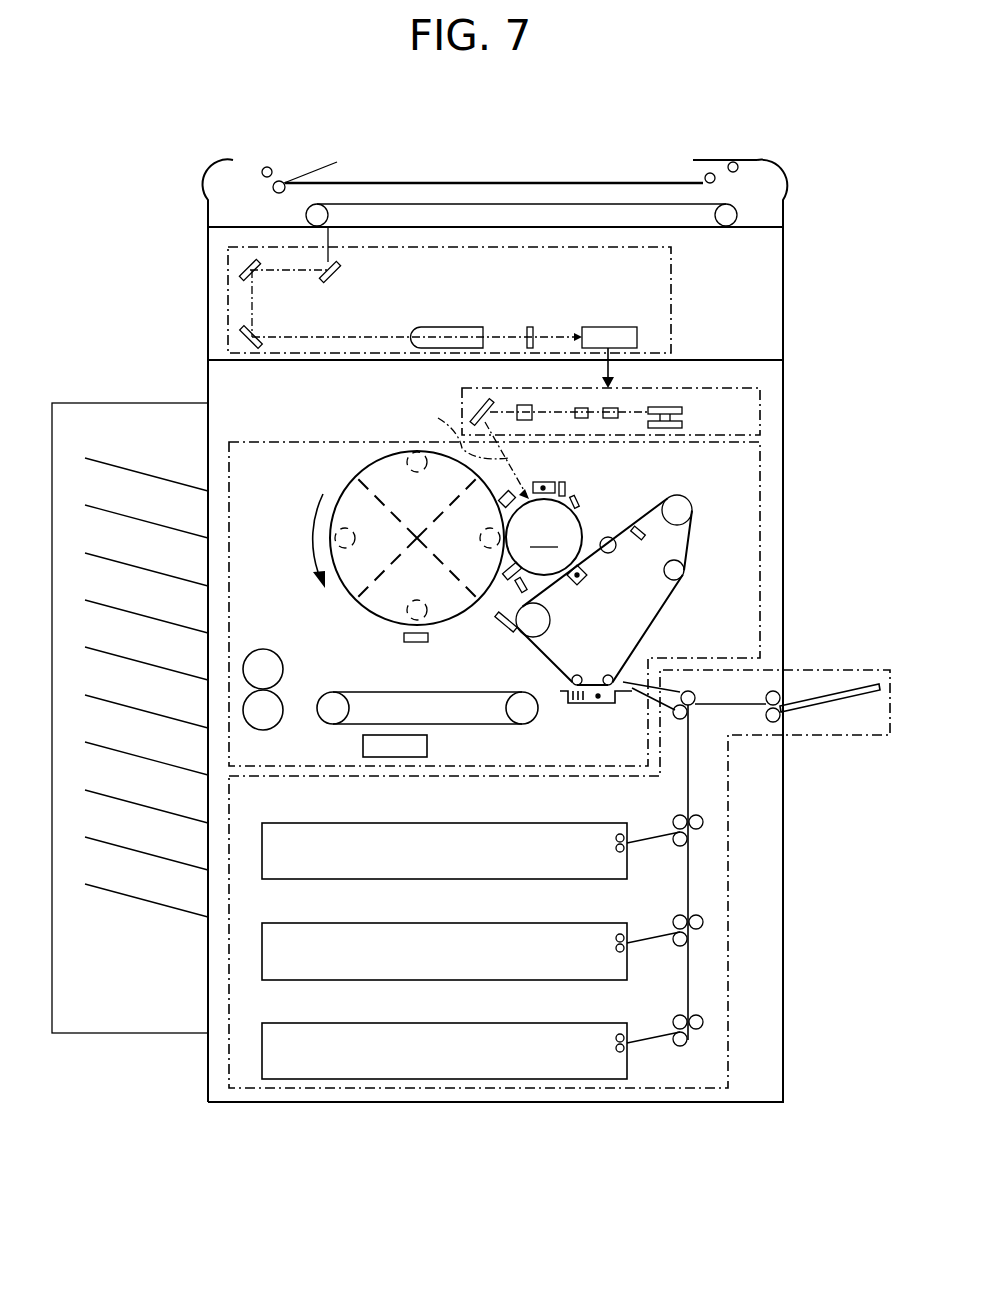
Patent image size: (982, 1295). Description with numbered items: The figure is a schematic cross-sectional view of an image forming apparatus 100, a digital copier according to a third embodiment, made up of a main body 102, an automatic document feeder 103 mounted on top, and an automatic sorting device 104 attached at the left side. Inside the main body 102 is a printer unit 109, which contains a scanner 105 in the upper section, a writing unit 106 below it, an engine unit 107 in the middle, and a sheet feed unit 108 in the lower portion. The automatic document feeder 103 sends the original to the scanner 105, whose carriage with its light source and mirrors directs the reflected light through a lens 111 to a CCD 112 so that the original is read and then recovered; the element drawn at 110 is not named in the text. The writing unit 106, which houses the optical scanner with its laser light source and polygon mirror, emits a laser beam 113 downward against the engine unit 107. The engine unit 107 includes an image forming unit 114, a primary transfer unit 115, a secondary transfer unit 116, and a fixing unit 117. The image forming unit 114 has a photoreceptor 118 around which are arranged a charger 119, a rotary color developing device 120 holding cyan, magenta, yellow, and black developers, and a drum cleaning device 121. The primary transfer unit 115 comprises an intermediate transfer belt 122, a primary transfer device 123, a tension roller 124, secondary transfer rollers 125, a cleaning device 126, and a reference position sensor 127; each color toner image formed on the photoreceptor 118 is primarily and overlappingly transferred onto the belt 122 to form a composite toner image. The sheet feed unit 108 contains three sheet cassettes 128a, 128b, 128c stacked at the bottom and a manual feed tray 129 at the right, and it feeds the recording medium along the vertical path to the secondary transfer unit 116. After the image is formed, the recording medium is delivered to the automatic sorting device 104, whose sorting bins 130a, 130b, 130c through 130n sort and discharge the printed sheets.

The image forming apparatus 100 is at (240, 140).
The main body 102 is at (783, 258).
The automatic document feeder 103 is at (508, 180).
The automatic sorting device 104 is at (125, 401).
The scanner 105 is at (672, 282).
The writing unit 106 is at (761, 410).
The engine unit 107 is at (761, 540).
The sheet feed unit 108 is at (845, 740).
The printer unit 109 is at (784, 480).
The lens 110 is at (454, 326).
The lens 111 is at (532, 326).
The CCD 112 is at (618, 326).
The laser beam 113 is at (463, 452).
The image forming unit 114 is at (584, 488).
The primary transfer unit 115 is at (676, 621).
The secondary transfer unit 116 is at (590, 706).
The fixing unit 117 is at (270, 648).
The photoreceptor 118 is at (544, 537).
The charger 119 is at (545, 482).
The color developing device 120 is at (343, 490).
The drum cleaning device 121 is at (580, 503).
The intermediate transfer belt 122 is at (689, 540).
The primary transfer device 123 is at (588, 585).
The tension roller 124 is at (612, 554).
The secondary transfer rollers 125 is at (604, 672).
The cleaning device 126 is at (500, 631).
The reference position sensor 127 is at (648, 538).
The sheet cassette 128a is at (533, 810).
The sheet cassette 128b is at (533, 910).
The sheet cassette 128c is at (533, 1010).
The manual feed tray 129 is at (826, 686).
The sorting bin 130a is at (116, 462).
The sorting bin 130b is at (116, 509).
The sorting bin 130c is at (116, 557).
The sorting bin 130n is at (114, 892).